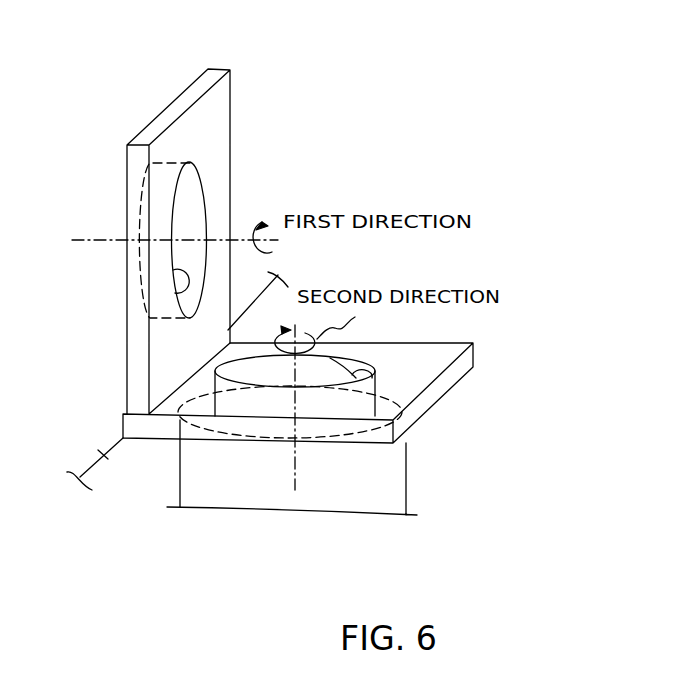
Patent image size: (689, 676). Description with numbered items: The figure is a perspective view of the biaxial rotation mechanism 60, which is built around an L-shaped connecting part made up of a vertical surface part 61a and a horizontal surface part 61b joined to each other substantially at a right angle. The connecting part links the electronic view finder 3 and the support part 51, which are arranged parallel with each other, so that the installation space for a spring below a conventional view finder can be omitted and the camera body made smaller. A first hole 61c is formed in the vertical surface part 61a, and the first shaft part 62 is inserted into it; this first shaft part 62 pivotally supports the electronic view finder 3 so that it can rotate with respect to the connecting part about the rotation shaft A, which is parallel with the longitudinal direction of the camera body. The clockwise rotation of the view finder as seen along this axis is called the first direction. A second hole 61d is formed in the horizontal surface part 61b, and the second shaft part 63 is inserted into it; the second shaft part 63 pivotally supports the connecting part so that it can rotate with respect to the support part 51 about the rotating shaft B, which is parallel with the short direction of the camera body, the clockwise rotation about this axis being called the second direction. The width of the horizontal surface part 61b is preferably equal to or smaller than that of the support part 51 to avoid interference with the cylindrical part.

The biaxial rotation mechanism 60 is at (521, 316).
The vertical surface part 61a is at (231, 70).
The horizontal surface part 61b is at (465, 368).
The first hole 61c is at (180, 292).
The second hole 61d is at (405, 403).
The first shaft part 62 is at (192, 190).
The second shaft part 63 is at (412, 393).
The support part 51 is at (392, 500).
The electronic view finder 3 is at (107, 456).
The rotation shaft A is at (78, 238).
The rotating shaft B is at (293, 487).